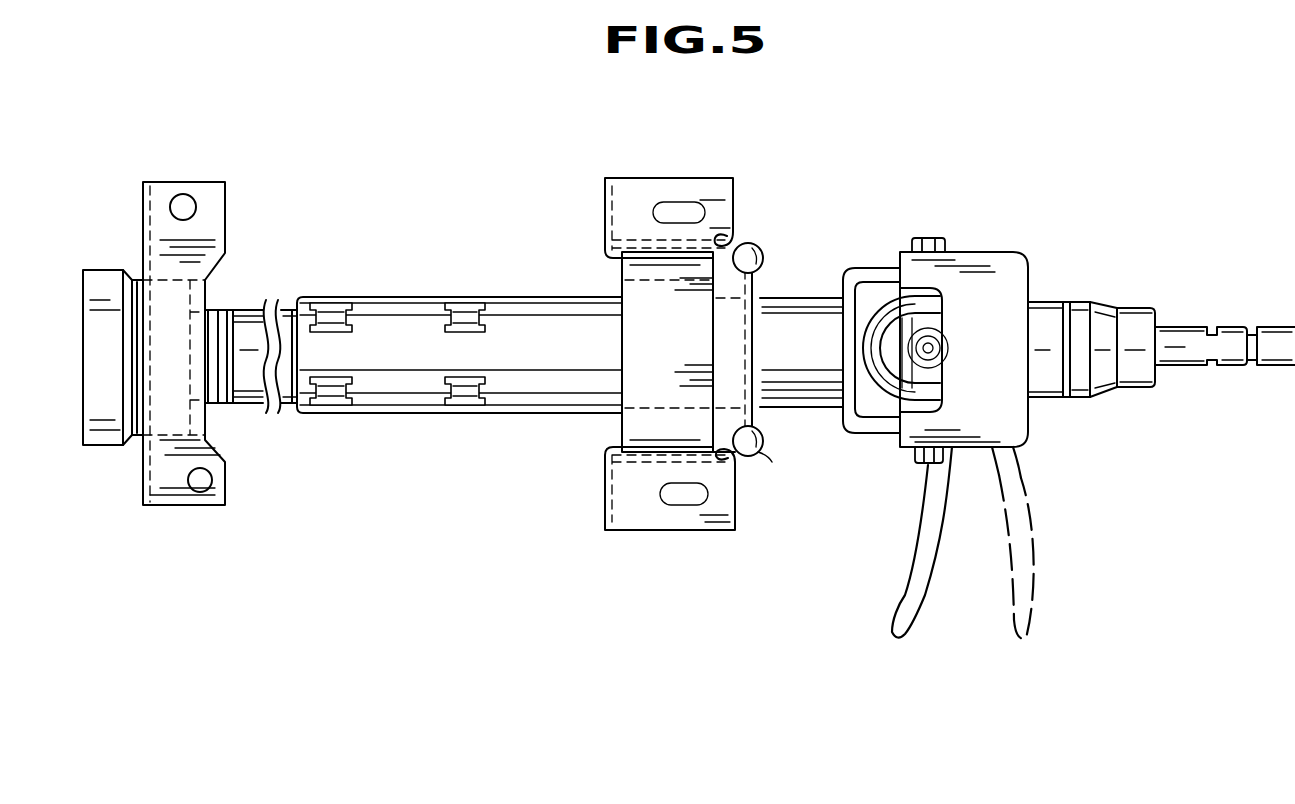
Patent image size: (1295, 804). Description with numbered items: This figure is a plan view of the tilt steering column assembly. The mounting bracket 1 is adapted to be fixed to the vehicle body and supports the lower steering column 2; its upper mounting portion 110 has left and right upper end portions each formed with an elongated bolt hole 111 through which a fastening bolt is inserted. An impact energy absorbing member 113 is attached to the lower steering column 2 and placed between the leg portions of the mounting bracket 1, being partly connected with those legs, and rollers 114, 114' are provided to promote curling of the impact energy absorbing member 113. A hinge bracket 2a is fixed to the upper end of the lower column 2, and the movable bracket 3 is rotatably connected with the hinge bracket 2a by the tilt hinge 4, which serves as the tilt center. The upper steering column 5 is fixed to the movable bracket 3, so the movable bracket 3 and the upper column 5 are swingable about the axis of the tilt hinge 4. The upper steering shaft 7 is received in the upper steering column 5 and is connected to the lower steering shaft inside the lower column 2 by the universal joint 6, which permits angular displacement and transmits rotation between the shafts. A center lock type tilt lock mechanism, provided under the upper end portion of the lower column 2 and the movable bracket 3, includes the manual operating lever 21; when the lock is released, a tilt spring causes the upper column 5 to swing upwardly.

The mounting bracket 1 is at (735, 196).
The lower steering column 2 is at (796, 300).
The hinge bracket 2a is at (772, 462).
The movable bracket 3 is at (998, 262).
The tilt hinge 4 is at (930, 238).
The upper steering column 5 is at (1082, 305).
The universal joint 6 is at (883, 318).
The upper steering shaft 7 is at (1170, 335).
The manual operating lever 21 is at (898, 582).
The upper mounting portion 110 is at (648, 345).
The elongated bolt hole 111 is at (680, 212).
The impact energy absorbing member 113 is at (755, 348).
The roller 114 is at (779, 230).
The roller 114' is at (774, 471).